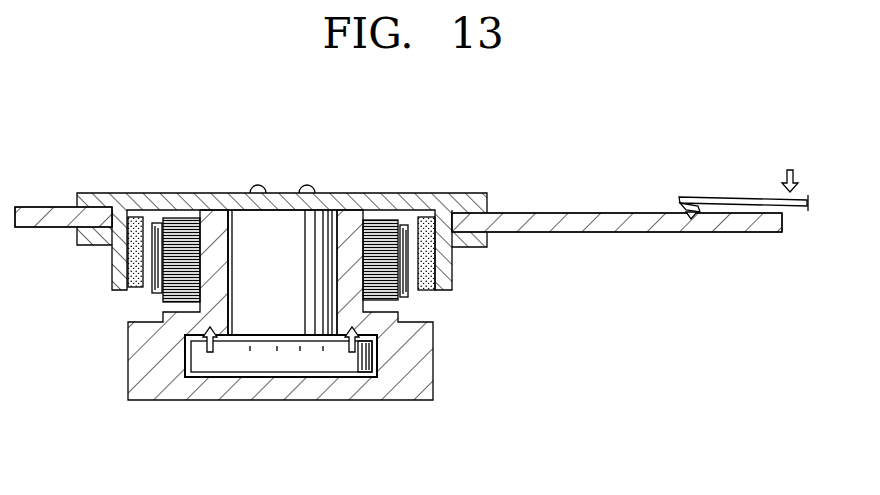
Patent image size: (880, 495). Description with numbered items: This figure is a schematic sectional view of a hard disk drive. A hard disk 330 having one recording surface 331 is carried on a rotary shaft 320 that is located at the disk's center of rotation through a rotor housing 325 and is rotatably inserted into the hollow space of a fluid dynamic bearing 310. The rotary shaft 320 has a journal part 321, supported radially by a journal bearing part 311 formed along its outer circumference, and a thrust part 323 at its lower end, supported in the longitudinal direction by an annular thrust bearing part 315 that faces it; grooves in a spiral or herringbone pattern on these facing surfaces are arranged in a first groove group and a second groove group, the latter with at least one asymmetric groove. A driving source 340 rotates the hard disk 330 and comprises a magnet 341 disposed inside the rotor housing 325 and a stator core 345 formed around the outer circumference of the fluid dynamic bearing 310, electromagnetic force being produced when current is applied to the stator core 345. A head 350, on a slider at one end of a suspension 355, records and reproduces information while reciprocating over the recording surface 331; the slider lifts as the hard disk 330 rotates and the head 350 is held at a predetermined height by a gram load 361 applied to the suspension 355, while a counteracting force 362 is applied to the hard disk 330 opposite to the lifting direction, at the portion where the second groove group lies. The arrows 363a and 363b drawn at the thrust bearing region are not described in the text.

The fluid dynamic bearing 310 is at (120, 355).
The journal bearing part 311 is at (200, 302).
The thrust bearing part 315 is at (187, 378).
The rotary shaft 320 is at (299, 208).
The journal part 321 is at (216, 215).
The thrust part 323 is at (226, 352).
The rotor housing 325 is at (163, 193).
The hard disk 330 is at (575, 246).
The recording surface 331 is at (557, 212).
The driving source 340 is at (441, 303).
The magnet 341 is at (437, 212).
The stator core 345 is at (388, 228).
The head 350 is at (692, 210).
The suspension 355 is at (740, 198).
The gram load 361 is at (790, 170).
The force 362 is at (690, 219).
The magnetic force direction 363a is at (210, 354).
The magnetic force direction 363b is at (352, 354).